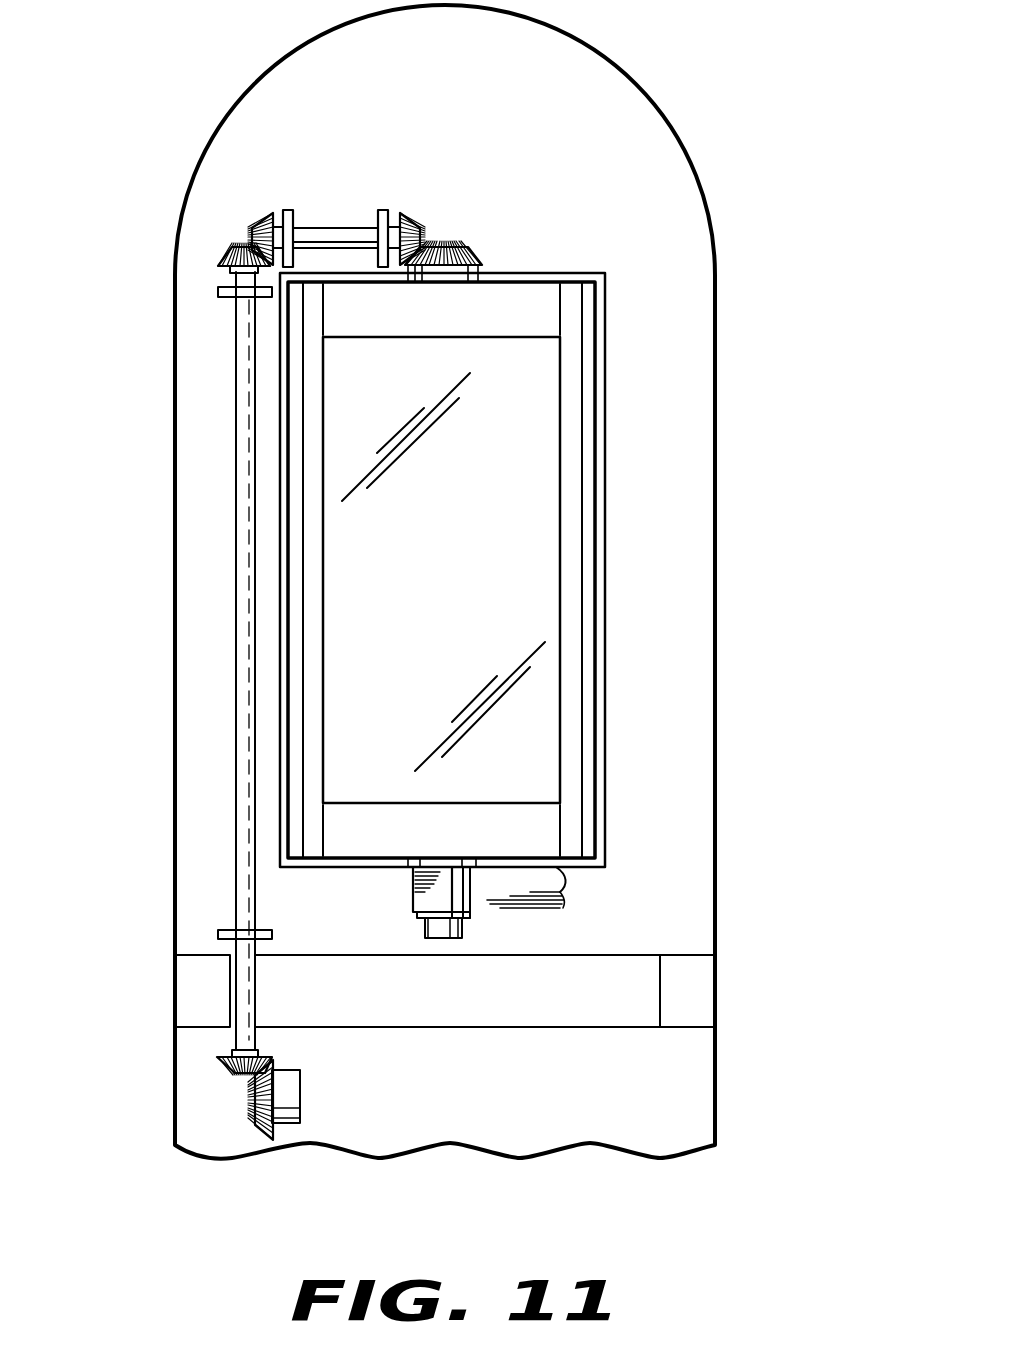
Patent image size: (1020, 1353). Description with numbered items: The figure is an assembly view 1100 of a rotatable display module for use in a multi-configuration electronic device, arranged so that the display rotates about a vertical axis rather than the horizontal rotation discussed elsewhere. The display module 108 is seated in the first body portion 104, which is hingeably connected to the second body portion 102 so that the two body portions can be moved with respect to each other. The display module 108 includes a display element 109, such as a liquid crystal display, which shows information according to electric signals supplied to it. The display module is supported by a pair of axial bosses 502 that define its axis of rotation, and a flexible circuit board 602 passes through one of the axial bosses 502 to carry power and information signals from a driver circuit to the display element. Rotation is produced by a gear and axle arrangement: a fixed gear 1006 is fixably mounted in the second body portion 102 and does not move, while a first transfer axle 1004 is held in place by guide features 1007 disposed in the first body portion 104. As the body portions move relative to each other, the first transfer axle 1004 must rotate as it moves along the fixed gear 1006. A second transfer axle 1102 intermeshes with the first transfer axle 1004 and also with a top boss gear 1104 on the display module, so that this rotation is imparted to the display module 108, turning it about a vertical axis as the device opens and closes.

The second body portion 102 is at (715, 1092).
The first body portion 104 is at (715, 710).
The rotating display module 108 is at (605, 428).
The display window 109 is at (464, 587).
The axial boss 502 is at (440, 273).
The flexible circuit board 602 is at (563, 905).
The transfer axle 1004 is at (234, 745).
The fixed gear 1006 is at (257, 1135).
The guide feature 1007 is at (290, 210).
The assembly view 1100 is at (241, 1306).
The second transfer axle 1102 is at (339, 228).
The top boss gear 1104 is at (472, 247).